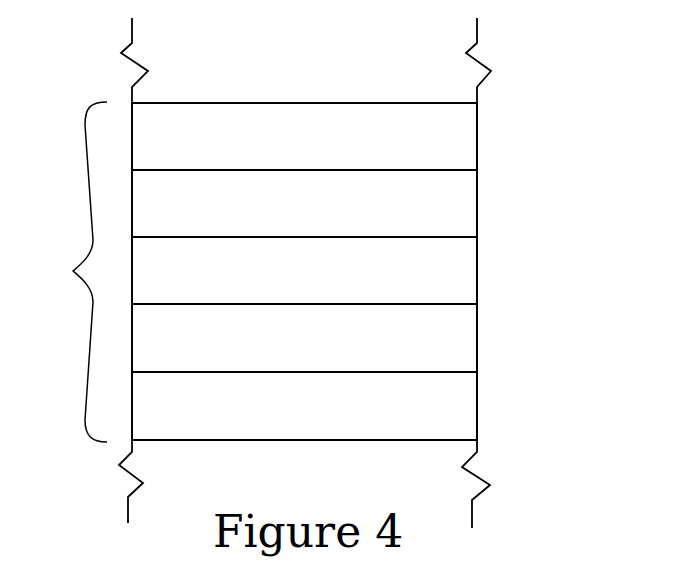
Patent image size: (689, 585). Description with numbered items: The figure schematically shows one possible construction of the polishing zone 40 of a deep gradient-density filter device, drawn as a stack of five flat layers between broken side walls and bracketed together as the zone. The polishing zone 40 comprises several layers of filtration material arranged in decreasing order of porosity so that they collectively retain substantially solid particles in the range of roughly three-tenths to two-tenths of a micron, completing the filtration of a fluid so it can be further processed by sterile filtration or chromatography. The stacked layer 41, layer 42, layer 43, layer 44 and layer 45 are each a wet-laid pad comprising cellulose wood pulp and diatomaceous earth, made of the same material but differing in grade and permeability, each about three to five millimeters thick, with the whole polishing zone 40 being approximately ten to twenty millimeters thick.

The polishing zone 40 is at (316, 273).
The layer 41 is at (477, 136).
The layer 42 is at (477, 203).
The layer 43 is at (477, 271).
The layer 44 is at (477, 338).
The layer 45 is at (477, 406).